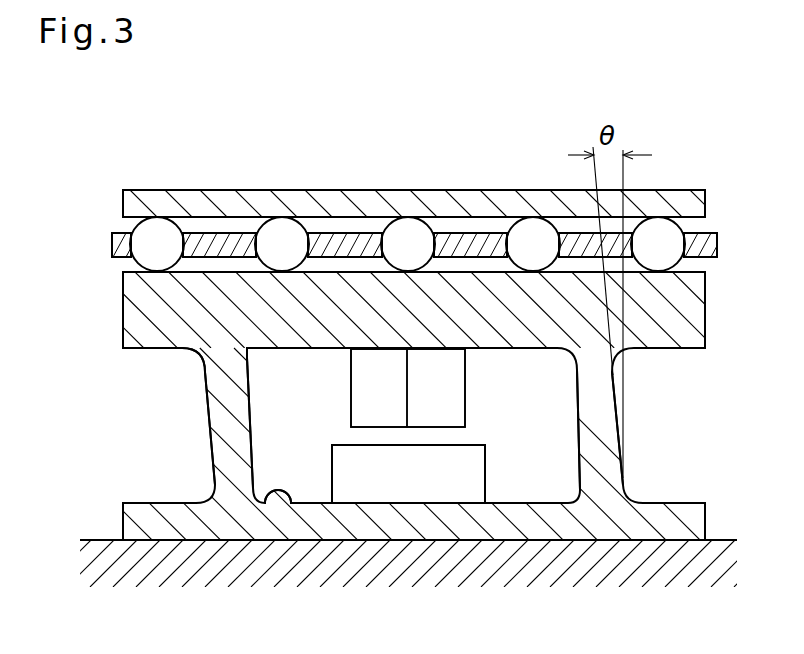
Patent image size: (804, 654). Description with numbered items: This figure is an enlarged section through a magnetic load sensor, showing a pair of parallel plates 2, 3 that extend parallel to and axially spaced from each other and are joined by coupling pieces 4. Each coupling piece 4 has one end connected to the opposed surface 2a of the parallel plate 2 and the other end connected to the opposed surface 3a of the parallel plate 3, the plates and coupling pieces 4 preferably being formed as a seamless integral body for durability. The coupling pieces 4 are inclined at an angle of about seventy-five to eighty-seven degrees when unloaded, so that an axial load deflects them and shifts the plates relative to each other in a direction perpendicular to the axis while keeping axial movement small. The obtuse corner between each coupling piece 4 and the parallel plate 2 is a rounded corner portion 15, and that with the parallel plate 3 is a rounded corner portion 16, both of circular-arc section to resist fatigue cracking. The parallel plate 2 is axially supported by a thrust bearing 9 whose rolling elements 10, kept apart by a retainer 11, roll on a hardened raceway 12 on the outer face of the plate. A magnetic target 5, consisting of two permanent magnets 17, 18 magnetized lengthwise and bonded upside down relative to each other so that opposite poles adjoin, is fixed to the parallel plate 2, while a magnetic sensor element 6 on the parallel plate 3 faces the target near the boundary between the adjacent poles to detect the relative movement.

The parallel plate 2 is at (690, 318).
The opposed surface 2a is at (660, 349).
The parallel plate 3 is at (700, 517).
The opposed surface 3a is at (690, 501).
The coupling piece 4 is at (217, 418).
The magnetic target 5 is at (391, 273).
The magnetic sensor element 6 is at (487, 473).
The thrust bearing 9 is at (136, 189).
The rolling element 10 is at (157, 228).
The retainer 11 is at (211, 237).
The raceway 12 is at (130, 270).
The rounded corner portion 15 is at (187, 360).
The rounded corner portion 16 is at (292, 505).
The permanent magnet 17 is at (364, 358).
The permanent magnet 18 is at (454, 357).